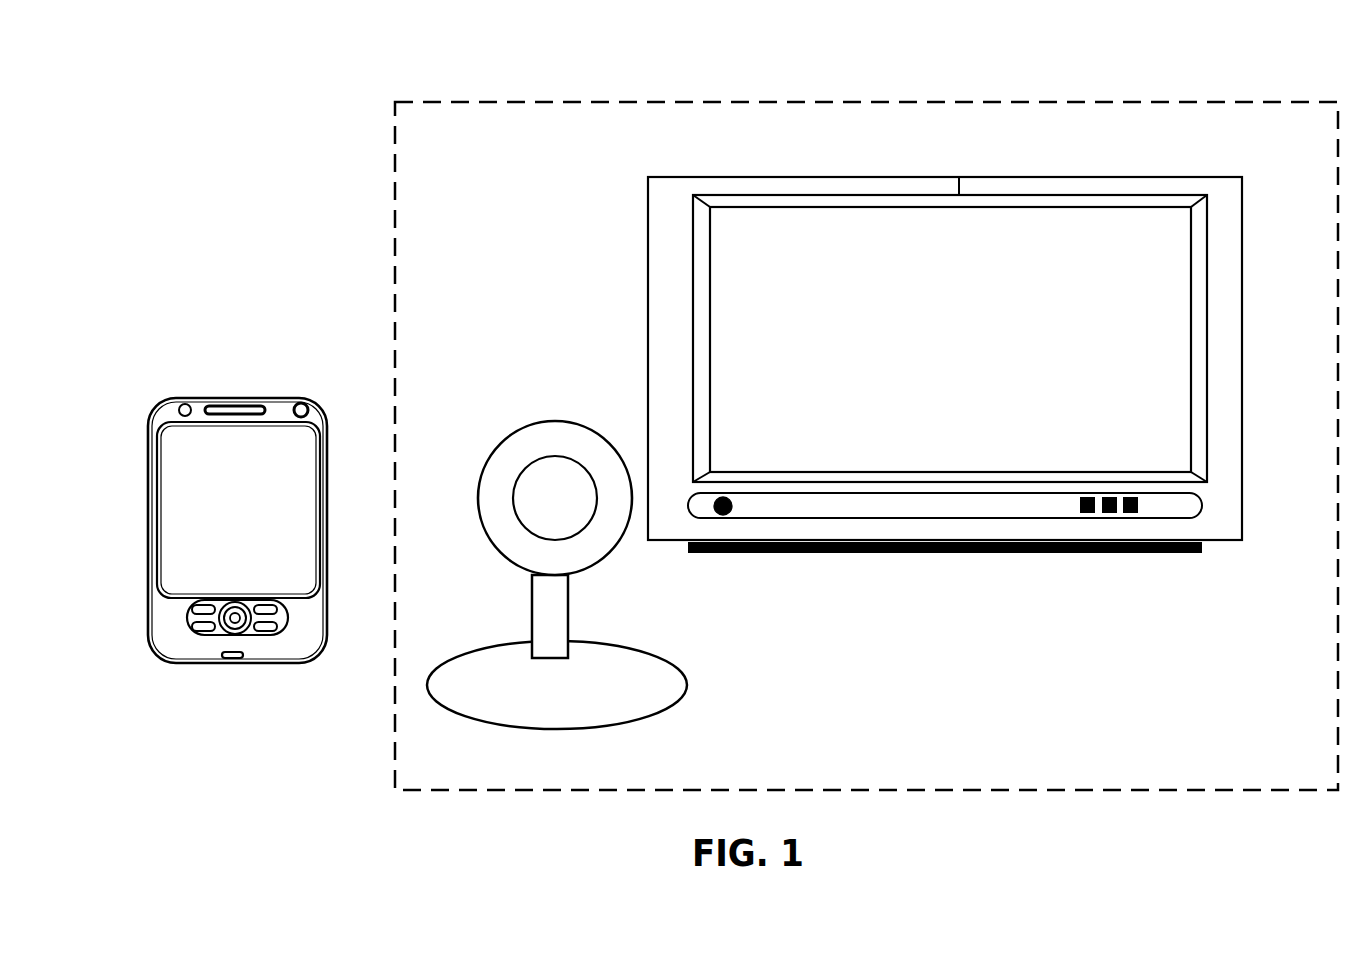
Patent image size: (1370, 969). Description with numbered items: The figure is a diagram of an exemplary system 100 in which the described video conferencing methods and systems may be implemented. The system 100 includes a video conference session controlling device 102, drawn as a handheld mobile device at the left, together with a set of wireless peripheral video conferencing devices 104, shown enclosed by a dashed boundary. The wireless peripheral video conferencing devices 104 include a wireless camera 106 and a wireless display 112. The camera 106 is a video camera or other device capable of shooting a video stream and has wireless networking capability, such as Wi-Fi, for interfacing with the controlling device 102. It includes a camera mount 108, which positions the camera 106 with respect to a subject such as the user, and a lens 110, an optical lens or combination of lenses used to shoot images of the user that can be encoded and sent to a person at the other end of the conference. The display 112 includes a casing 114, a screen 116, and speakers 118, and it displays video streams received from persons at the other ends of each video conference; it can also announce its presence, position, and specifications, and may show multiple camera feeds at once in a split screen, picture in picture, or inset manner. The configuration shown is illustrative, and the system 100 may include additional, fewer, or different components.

The system 100 is at (226, 103).
The video conference session controlling device 102 is at (303, 400).
The wireless peripheral video conferencing devices 104 is at (1093, 102).
The wireless camera 106 is at (687, 682).
The camera mount 108 is at (503, 438).
The lens 110 is at (518, 522).
The wireless display 112 is at (972, 553).
The casing 114 is at (1242, 353).
The screen 116 is at (1157, 242).
The speakers 118 is at (1117, 513).